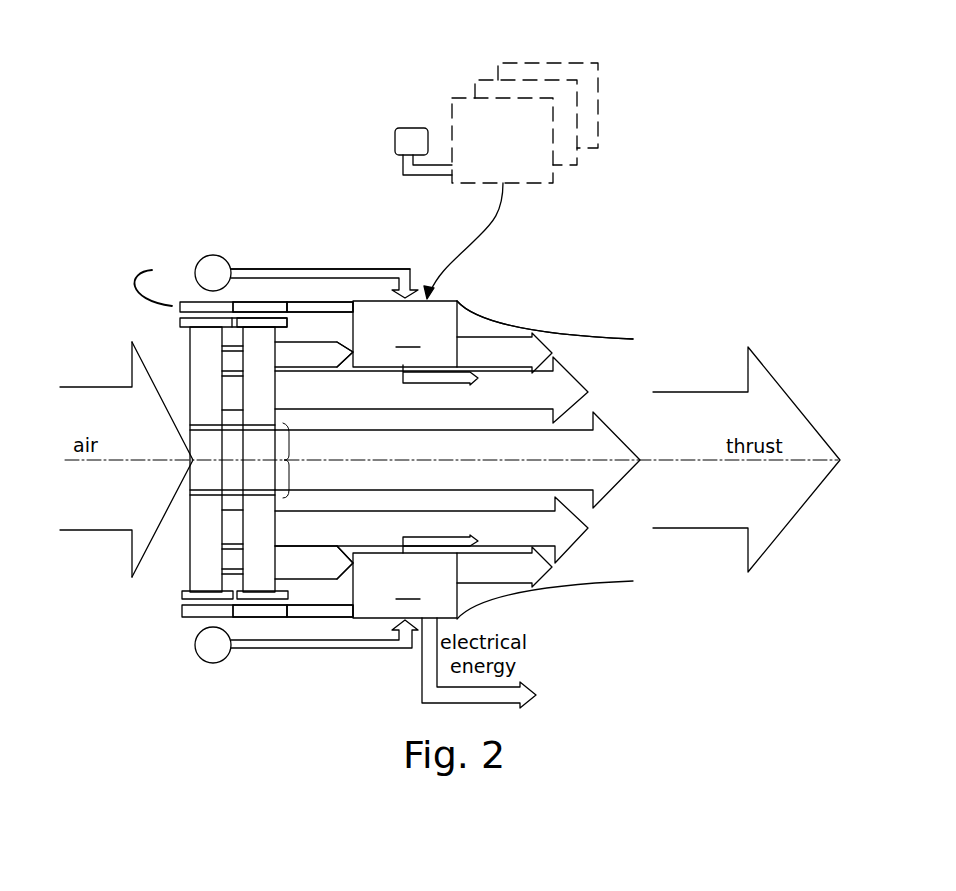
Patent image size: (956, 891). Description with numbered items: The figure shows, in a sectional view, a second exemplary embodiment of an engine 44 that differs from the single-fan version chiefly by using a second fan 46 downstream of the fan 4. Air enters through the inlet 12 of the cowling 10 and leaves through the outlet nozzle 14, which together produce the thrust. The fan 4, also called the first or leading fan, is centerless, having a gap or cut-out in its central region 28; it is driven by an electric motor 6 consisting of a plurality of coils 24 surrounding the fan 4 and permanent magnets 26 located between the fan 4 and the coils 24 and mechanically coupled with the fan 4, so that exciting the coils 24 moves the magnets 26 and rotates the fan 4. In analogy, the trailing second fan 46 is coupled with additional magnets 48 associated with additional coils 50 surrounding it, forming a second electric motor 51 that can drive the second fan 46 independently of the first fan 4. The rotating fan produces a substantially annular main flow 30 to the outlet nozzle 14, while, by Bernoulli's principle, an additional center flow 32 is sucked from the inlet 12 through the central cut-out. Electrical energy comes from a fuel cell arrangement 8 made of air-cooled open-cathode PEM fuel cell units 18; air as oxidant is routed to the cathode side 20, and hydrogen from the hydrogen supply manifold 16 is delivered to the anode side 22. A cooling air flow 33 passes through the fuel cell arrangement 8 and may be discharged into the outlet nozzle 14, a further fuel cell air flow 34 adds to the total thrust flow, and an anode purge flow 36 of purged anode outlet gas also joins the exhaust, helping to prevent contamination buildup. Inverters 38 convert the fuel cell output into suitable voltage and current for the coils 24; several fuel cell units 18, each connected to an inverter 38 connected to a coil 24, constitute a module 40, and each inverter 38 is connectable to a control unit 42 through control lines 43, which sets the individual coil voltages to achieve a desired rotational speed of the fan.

The fan 4 is at (207, 400).
The electric motor 6 is at (175, 318).
The fuel cell arrangement 8 is at (443, 300).
The cowling 10 is at (152, 270).
The inlet 12 is at (126, 369).
The outlet nozzle 14 is at (620, 333).
The hydrogen supply manifold 16 is at (213, 256).
The fuel cell unit 18 is at (366, 459).
The cathode side 20 is at (374, 298).
The anode side 22 is at (428, 288).
The coils 24 is at (190, 303).
The permanent magnets 26 is at (226, 302).
The central region 28 is at (301, 460).
The main flow 30 is at (566, 388).
The center flow 32 is at (622, 442).
The cooling air flow 33 is at (340, 370).
The fuel cell air flow 34 is at (502, 348).
The anode purge flow 36 is at (479, 378).
The inverter 38 is at (342, 286).
The module 40 is at (453, 97).
The control unit 42 is at (405, 128).
The control lines 43 is at (441, 160).
The engine 44 is at (604, 259).
The second fan 46 is at (271, 393).
The additional magnets 48 is at (335, 302).
The additional coils 50 is at (260, 302).
The second electric motor 51 is at (290, 323).